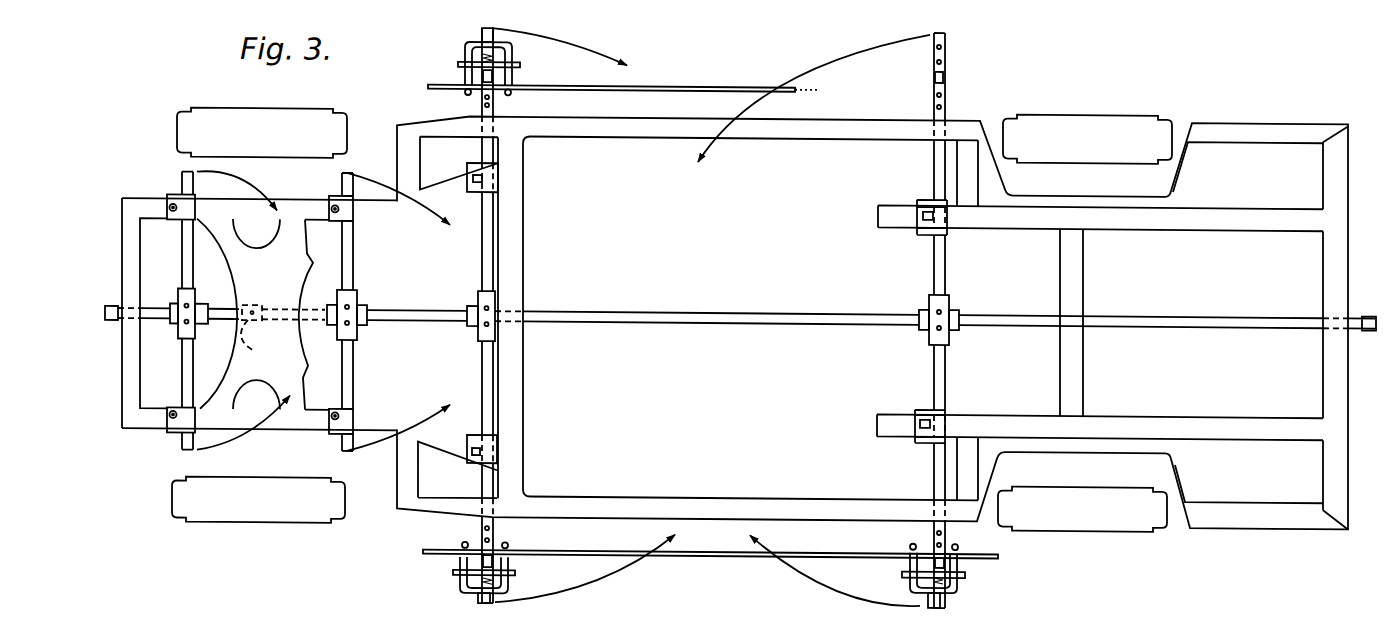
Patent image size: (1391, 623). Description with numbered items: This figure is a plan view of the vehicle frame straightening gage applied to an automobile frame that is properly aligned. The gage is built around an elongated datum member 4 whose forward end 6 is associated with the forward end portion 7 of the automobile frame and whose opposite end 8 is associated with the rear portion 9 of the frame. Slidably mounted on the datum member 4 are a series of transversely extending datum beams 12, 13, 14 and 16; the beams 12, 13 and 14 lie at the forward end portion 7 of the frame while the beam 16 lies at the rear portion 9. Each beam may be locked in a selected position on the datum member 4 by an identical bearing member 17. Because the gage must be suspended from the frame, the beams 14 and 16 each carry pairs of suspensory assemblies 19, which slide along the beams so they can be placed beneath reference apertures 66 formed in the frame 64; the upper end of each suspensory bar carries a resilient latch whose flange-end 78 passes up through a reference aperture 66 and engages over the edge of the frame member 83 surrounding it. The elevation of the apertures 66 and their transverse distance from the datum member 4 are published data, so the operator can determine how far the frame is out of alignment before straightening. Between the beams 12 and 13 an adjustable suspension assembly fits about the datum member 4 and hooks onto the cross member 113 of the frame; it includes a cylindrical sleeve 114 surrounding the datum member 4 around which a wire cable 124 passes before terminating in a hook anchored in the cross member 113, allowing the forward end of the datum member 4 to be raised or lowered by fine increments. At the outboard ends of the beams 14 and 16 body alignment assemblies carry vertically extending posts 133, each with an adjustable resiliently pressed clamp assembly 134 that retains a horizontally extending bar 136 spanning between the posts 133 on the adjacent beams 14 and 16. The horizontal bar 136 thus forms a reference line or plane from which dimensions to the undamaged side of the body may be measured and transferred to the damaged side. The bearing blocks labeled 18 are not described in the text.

The datum member 4 is at (662, 307).
The forward end of datum member 6 is at (117, 307).
The automobile frame forward end portion 7 is at (124, 192).
The opposite end of datum member 8 is at (1358, 306).
The rear portion of automobile frame 9 is at (1240, 110).
The transversely extending datum beam 12 is at (183, 285).
The transversely extending datum beam 13 is at (355, 268).
The transversely extending datum beam 14 is at (500, 245).
The transversely extending datum beam 16 is at (948, 250).
The bearing member 17 is at (176, 324).
The bearing blocks 18 is at (177, 191).
The suspensory assembly 19 is at (476, 157).
The frame 64 is at (297, 205).
The reference aperture 66 is at (168, 206).
The flange-end of latch 78 is at (483, 173).
The frame member 83 is at (121, 373).
The cross member 113 is at (297, 270).
The cylindrical sleeve 114 is at (253, 346).
The wire cable 124 is at (268, 291).
The post 133 is at (494, 75).
The resiliently pressed clamp assembly 134 is at (455, 68).
The horizontal bar 136 is at (699, 80).